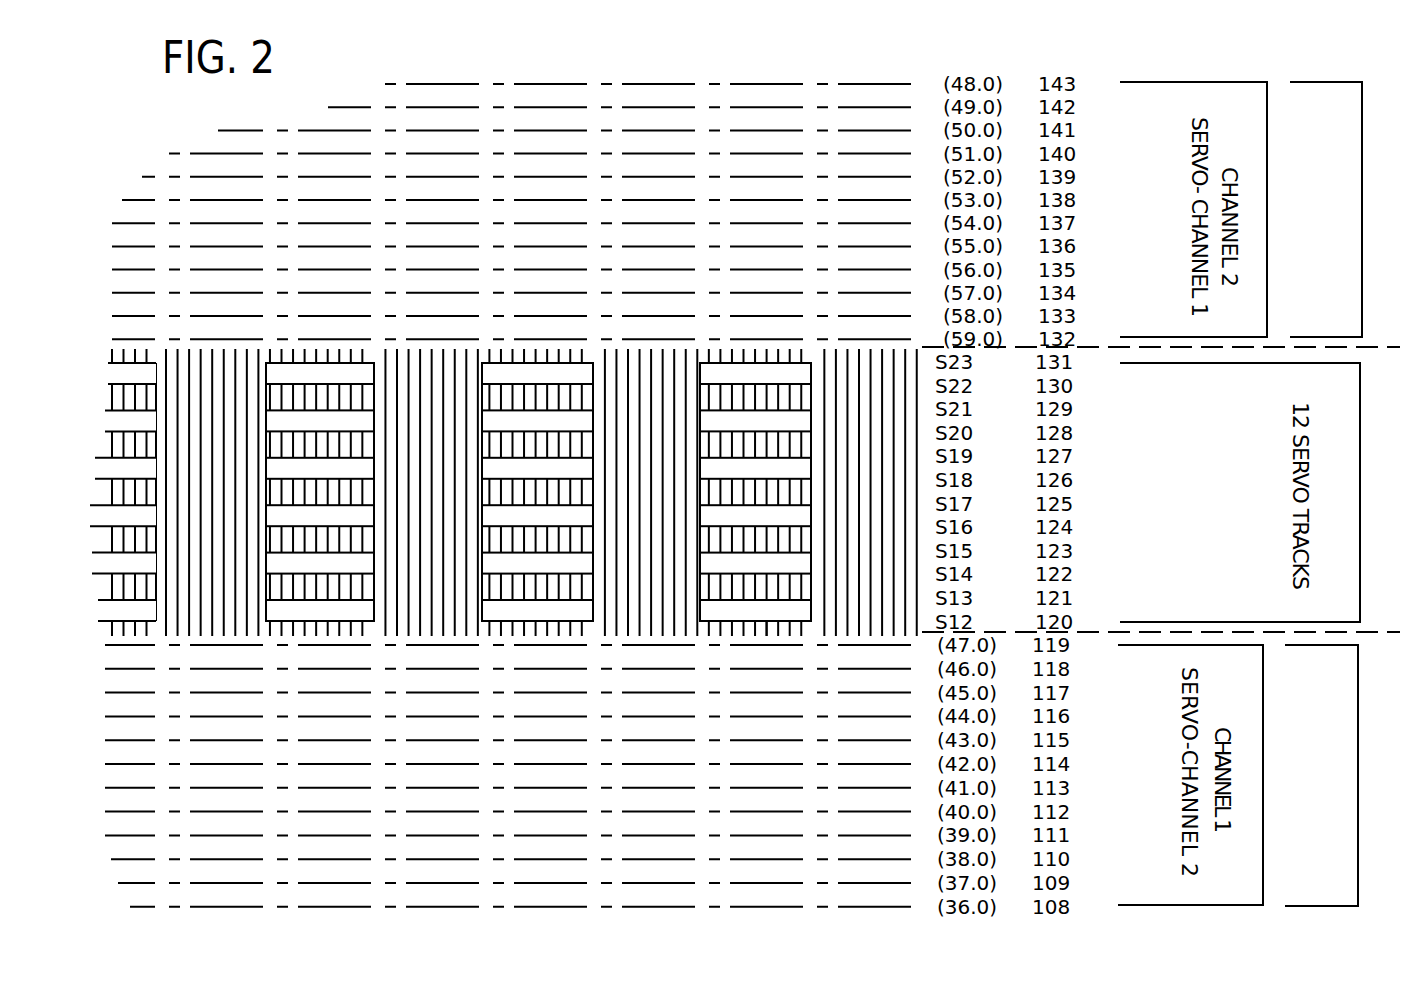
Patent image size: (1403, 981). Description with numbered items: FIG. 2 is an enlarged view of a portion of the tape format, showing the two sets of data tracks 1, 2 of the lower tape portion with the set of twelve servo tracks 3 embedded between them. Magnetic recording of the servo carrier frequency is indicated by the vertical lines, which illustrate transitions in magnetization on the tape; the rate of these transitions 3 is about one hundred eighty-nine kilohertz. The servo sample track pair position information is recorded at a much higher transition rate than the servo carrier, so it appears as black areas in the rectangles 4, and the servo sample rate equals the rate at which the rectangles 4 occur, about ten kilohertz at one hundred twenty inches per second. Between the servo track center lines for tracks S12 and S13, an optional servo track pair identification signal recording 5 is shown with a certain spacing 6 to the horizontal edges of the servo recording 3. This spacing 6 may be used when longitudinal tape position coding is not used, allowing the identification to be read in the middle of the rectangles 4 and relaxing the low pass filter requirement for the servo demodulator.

The data tracks 1 is at (603, 766).
The data tracks 2 is at (604, 241).
The servo tracks 3 is at (882, 401).
The black rectangles 4 is at (883, 470).
The servo track pair identification signal recording 5 is at (882, 608).
The spacing 6 is at (769, 613).